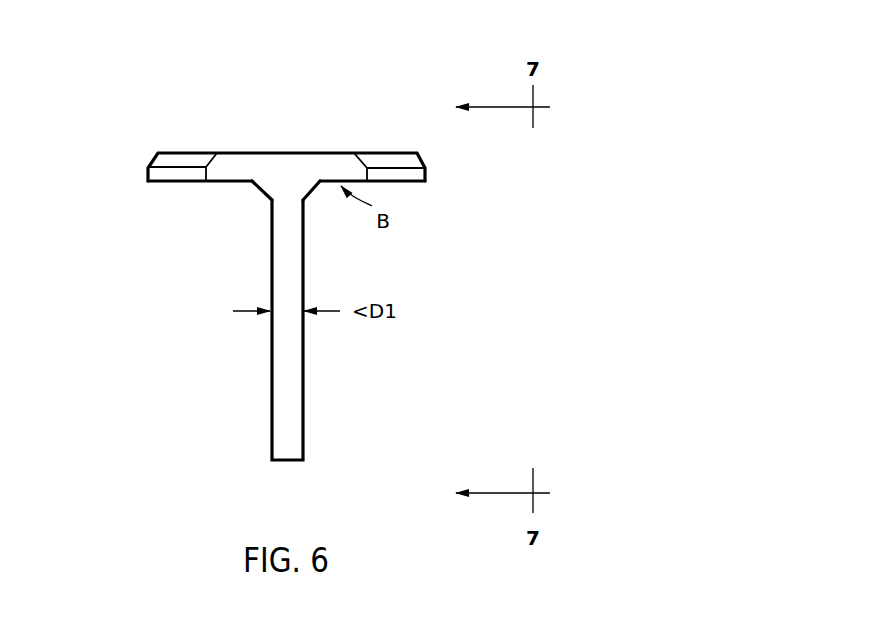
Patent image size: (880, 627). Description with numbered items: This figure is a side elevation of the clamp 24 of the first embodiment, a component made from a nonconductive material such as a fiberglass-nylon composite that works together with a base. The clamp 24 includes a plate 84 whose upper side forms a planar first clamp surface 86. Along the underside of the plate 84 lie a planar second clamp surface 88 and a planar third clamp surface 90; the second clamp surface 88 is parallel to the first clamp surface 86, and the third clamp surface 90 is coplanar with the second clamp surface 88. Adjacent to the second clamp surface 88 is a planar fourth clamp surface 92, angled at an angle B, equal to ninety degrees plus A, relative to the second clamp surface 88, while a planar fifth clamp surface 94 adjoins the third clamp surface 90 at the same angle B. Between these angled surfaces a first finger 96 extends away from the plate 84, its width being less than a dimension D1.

The clamp 24 is at (127, 82).
The plate 84 is at (155, 175).
The first clamp surface 86 is at (332, 152).
The second clamp surface 88 is at (175, 185).
The third clamp surface 90 is at (390, 184).
The fourth clamp surface 92 is at (258, 190).
The fifth clamp surface 94 is at (315, 201).
The first finger 96 is at (291, 363).